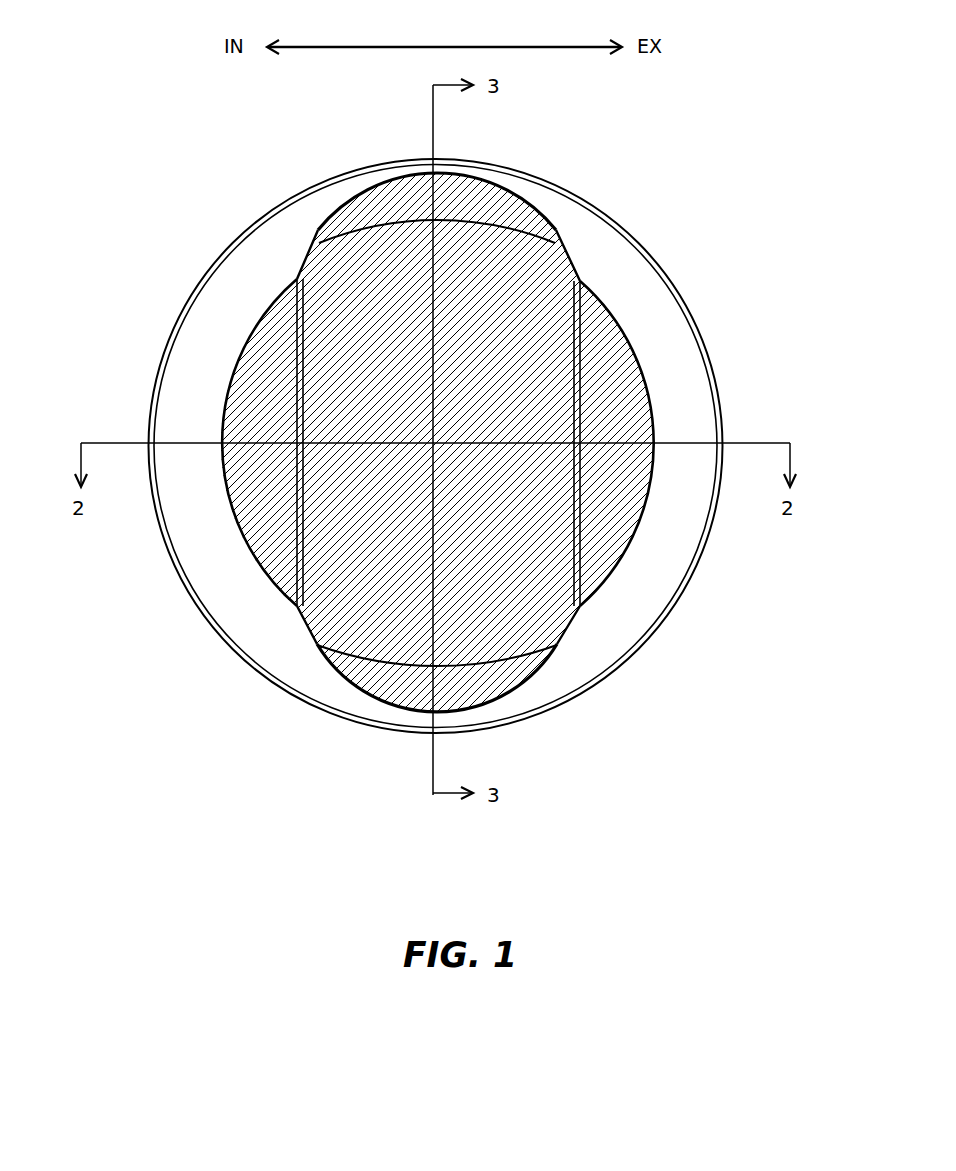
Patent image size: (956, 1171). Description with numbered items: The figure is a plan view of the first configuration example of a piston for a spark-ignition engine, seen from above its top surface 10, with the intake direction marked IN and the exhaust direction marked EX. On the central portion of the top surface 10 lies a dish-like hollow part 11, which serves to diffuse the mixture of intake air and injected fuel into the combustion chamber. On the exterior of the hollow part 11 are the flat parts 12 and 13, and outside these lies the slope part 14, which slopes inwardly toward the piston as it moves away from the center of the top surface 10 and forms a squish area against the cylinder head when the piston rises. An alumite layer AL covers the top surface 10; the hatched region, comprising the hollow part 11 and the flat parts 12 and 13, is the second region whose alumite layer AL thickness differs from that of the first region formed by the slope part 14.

The top surface 10 is at (600, 200).
The hollow part 11 is at (542, 607).
The flat part 12 is at (270, 545).
The flat part 13 is at (385, 205).
The slope part 14 is at (683, 492).
The alumite layer AL is at (172, 410).